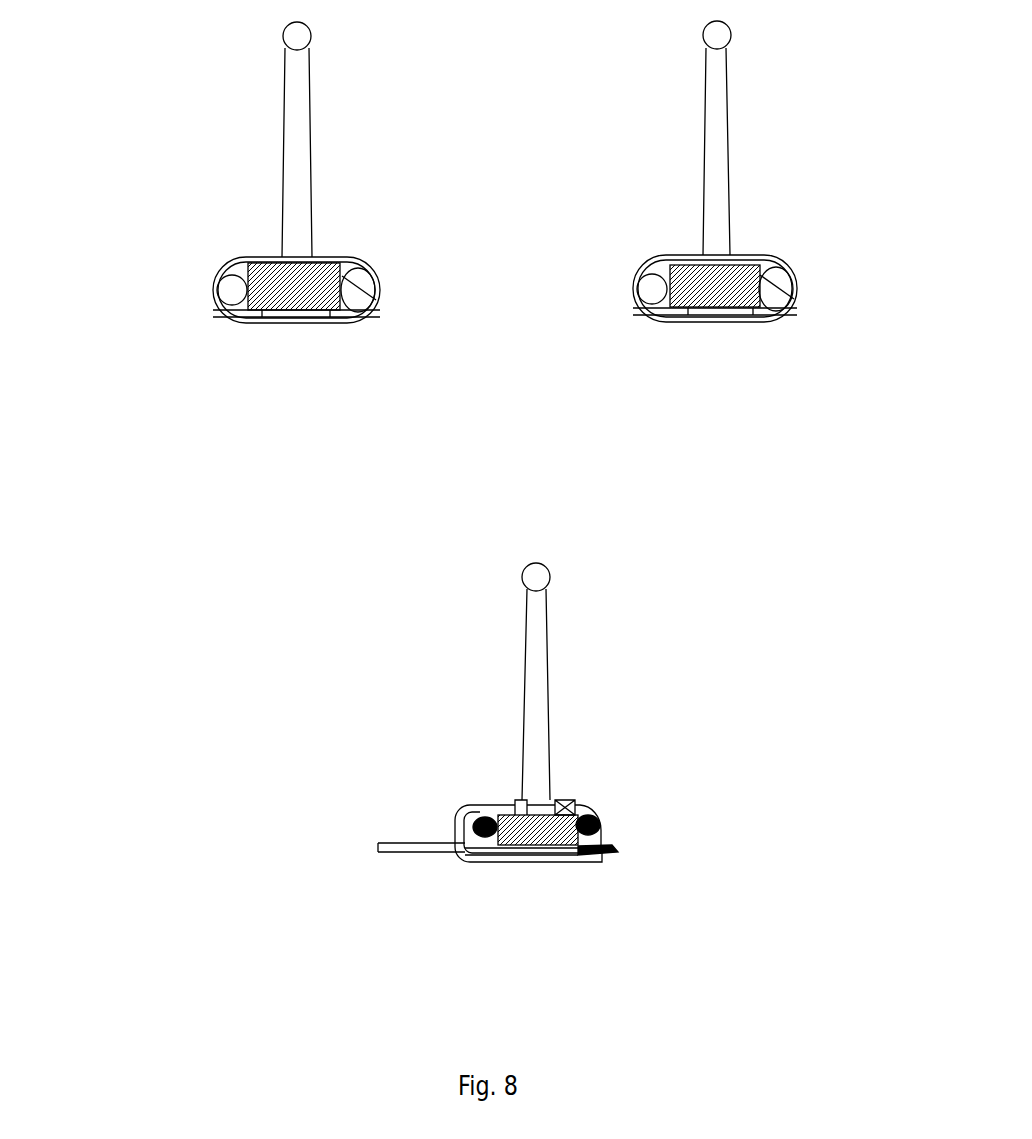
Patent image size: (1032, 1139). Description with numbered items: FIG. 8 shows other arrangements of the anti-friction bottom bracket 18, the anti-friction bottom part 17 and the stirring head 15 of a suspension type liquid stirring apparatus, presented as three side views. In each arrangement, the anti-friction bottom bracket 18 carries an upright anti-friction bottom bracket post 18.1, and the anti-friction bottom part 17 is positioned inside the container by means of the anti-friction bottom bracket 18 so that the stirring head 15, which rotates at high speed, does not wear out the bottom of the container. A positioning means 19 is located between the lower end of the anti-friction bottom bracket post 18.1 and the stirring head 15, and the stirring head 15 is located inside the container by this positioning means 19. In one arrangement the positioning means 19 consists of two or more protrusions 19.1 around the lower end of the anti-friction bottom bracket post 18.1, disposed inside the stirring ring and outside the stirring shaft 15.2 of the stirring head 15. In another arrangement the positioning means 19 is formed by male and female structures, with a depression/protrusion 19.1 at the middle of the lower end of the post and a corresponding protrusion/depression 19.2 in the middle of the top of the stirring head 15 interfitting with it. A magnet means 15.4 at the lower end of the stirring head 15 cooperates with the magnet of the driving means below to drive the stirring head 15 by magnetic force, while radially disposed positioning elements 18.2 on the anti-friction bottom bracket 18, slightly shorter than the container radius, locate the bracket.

The stirring head 15 is at (235, 312).
The stirring shaft 15.2 is at (512, 800).
The magnet means 15.4 is at (260, 313).
The anti-friction bottom part 17 is at (330, 322).
The anti-friction bottom bracket 18 is at (213, 285).
The anti-friction bottom bracket post 18.1 is at (285, 143).
The positioning elements 18.2 is at (420, 853).
The positioning means 19 is at (480, 805).
The protrusions / depression-protrusion 19.1 is at (330, 308).
The protrusion/depression 19.2 is at (275, 258).